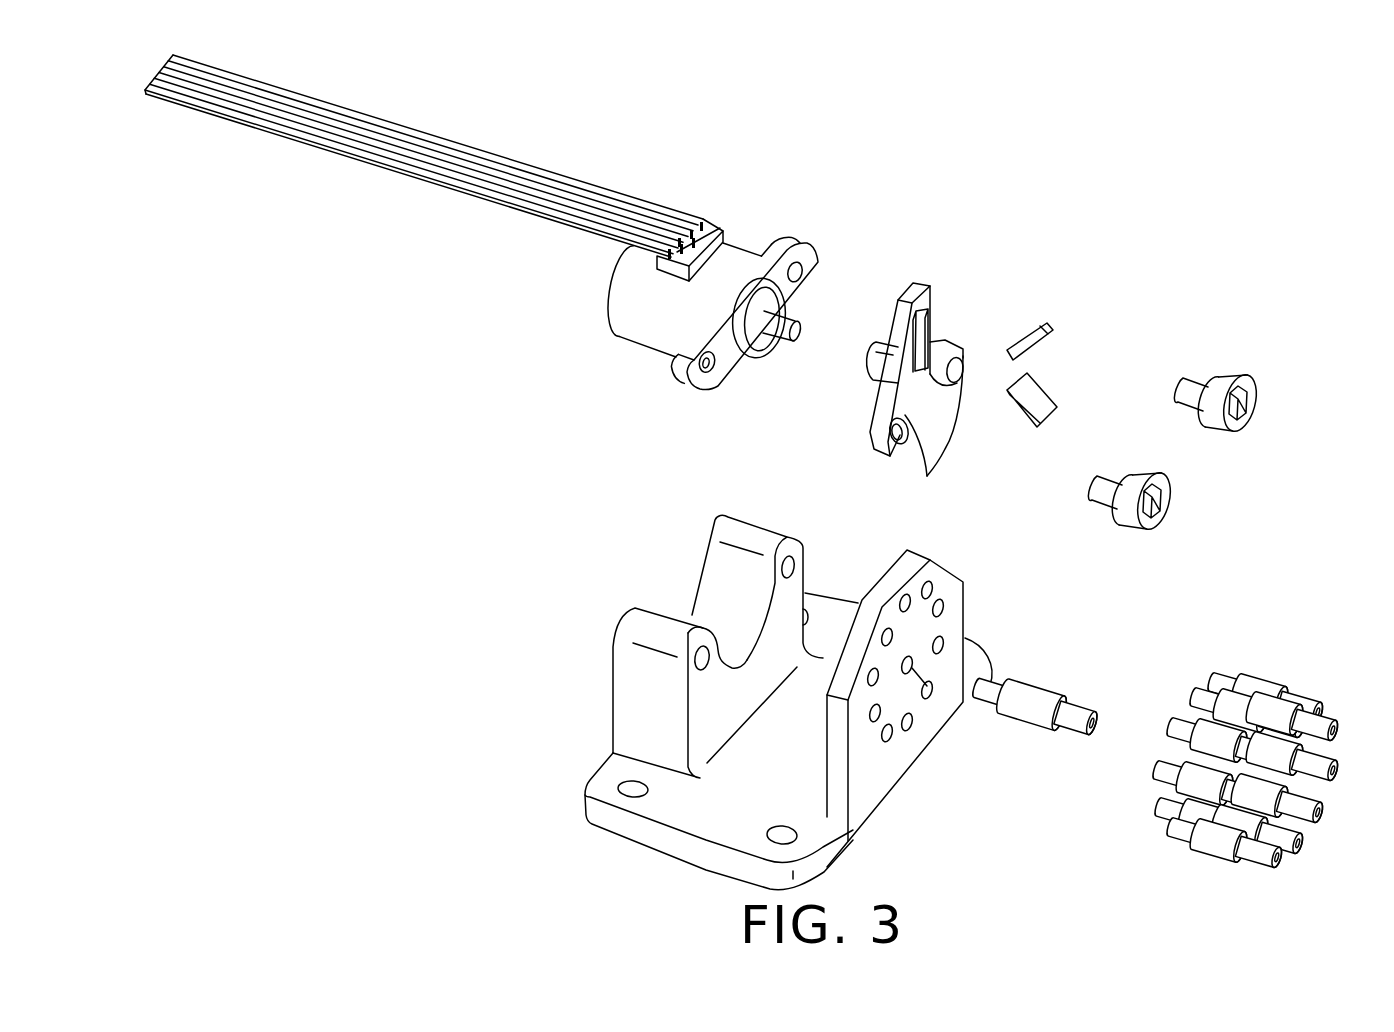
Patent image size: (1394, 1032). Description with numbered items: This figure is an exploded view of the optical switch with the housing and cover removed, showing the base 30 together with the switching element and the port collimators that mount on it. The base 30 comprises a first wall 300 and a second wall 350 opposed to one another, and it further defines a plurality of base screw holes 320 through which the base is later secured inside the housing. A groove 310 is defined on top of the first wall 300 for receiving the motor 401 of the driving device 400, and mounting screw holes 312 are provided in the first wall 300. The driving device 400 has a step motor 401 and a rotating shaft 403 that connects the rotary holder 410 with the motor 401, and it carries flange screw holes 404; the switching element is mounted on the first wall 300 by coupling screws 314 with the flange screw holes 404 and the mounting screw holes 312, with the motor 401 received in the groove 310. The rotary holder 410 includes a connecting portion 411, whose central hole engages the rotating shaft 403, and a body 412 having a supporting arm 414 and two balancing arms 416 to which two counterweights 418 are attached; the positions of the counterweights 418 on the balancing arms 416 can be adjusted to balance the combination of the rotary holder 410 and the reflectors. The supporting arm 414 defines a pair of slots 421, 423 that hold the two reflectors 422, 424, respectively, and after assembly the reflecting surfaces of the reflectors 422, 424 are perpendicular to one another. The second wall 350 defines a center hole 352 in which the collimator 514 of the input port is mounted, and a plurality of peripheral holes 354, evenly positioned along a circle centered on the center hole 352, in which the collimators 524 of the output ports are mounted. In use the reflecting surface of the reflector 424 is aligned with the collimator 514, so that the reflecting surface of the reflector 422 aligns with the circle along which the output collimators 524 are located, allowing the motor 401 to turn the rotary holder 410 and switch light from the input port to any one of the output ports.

The base 30 is at (595, 758).
The first wall 300 is at (641, 626).
The groove 310 is at (720, 595).
The mounting screw holes 312 is at (813, 523).
The screws 314 is at (1137, 477).
The base screw holes 320 is at (629, 792).
The second wall 350 is at (960, 597).
The center hole 352 is at (932, 692).
The peripheral holes 354 is at (872, 720).
The driving device 400 is at (731, 217).
The motor 401 is at (647, 306).
The rotating shaft 403 is at (741, 350).
The flange screw holes 404 is at (802, 244).
The rotary holder 410 is at (896, 289).
The connecting portion 411 is at (868, 350).
The body 412 is at (871, 380).
The supporting arm 414 is at (914, 288).
The balancing arms 416 is at (956, 355).
The counterweights 418 is at (908, 434).
The slot 421 is at (919, 305).
The reflector 422 is at (1050, 327).
The slot 423 is at (934, 330).
The reflector 424 is at (1040, 424).
The collimator 514 is at (1040, 690).
The collimators 524 is at (1270, 683).